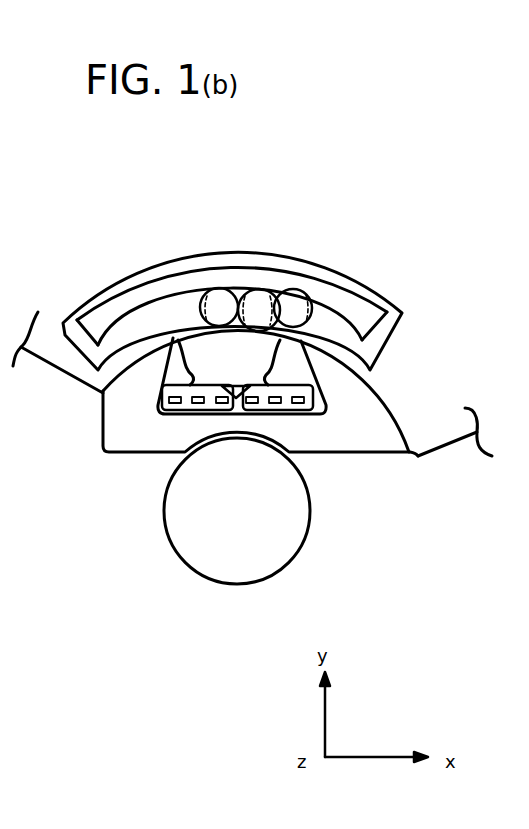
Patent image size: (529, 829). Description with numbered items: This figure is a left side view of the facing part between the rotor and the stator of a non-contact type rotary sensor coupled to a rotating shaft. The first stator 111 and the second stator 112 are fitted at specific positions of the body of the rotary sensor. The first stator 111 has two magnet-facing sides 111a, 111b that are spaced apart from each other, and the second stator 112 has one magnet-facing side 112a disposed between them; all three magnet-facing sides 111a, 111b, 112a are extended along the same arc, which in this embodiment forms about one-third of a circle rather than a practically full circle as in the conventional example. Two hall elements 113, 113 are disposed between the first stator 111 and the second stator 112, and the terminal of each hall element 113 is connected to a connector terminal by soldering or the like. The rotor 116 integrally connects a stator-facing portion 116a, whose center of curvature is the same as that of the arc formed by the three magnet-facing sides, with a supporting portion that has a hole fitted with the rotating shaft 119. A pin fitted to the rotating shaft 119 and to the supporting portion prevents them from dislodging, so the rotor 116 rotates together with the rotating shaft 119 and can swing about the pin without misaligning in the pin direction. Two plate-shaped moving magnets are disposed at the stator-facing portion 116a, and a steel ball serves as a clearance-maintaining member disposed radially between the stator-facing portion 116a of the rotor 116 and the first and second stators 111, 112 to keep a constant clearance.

The first stator 111 is at (328, 450).
The magnet-facing side of the first stator 111a is at (140, 373).
The magnet-facing side of the first stator 111b is at (362, 390).
The second stator 112 is at (220, 367).
The magnet-facing side of the second stator 112a is at (227, 342).
The hall element 113 is at (280, 405).
The rotor 116 is at (343, 276).
The stator-facing portion 116a is at (120, 287).
The rotating shaft 119 is at (233, 573).